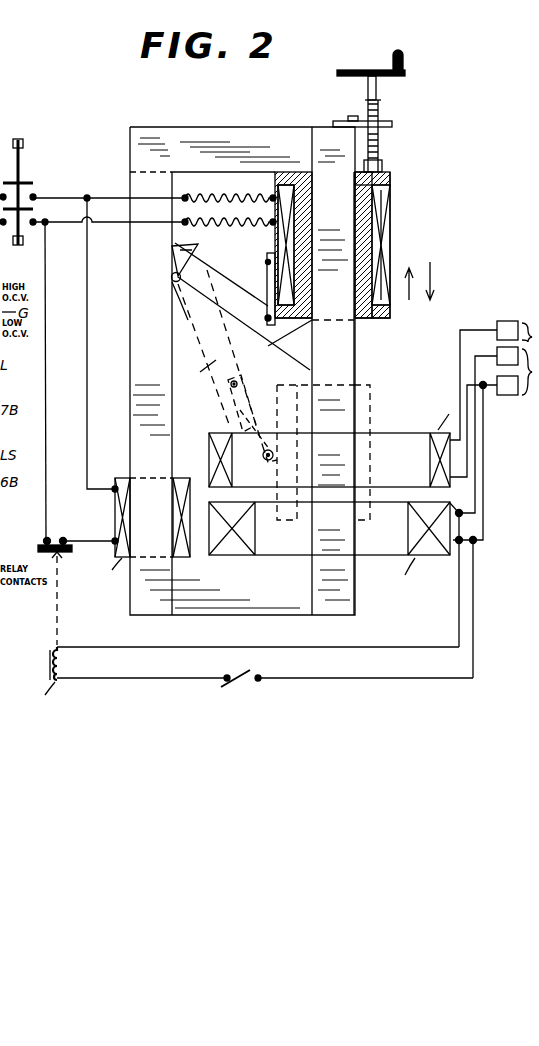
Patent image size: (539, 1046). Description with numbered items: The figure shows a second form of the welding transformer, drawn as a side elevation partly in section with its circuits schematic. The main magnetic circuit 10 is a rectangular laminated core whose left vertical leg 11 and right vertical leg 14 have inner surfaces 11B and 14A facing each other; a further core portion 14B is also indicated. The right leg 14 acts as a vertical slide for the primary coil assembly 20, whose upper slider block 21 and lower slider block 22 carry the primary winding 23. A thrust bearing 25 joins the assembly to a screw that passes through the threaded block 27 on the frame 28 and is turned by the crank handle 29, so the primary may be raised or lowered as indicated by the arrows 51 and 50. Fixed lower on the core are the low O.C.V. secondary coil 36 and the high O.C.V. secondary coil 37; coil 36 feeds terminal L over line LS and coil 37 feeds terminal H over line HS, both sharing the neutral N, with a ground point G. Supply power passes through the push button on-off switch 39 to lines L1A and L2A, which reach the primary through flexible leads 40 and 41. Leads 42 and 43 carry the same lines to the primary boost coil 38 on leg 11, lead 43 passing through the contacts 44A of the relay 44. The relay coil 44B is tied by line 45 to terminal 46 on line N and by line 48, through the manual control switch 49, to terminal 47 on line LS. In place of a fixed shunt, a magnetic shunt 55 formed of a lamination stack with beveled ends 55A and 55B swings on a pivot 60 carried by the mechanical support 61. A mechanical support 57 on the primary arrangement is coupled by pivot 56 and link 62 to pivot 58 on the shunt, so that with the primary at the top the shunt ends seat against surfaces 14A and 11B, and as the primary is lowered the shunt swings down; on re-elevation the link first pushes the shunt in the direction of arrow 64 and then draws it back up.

The main magnetic circuit 10 is at (213, 134).
The left vertical leg 11 is at (148, 320).
The inner surface of leg 11 11B is at (171, 276).
The right vertical leg 14 is at (348, 337).
The inner surface of leg 14 14A is at (320, 334).
The core leg 14B is at (375, 435).
The primary coil assembly 20 is at (401, 205).
The upper slider block 21 is at (391, 187).
The lower slider block 22 is at (382, 316).
The primary winding 23 is at (386, 252).
The thrust bearing 25 is at (381, 171).
The threaded block 27 is at (380, 118).
The frame 28 is at (393, 125).
The crank handle 29 is at (385, 70).
The low O.C.V. secondary coil 36 is at (460, 556).
The high O.C.V. secondary coil 37 is at (464, 486).
The primary boost coil 38 is at (112, 522).
The push button on-off switch 39 is at (35, 183).
The flexible lead 40 is at (227, 196).
The flexible lead 41 is at (258, 212).
The lead 42 is at (88, 435).
The lead 43 is at (47, 415).
The relay 44 is at (47, 628).
The relay contacts 44A is at (50, 540).
The relay coil 44B is at (50, 667).
The line 45 is at (345, 646).
The terminal 46 is at (462, 515).
The terminal 47 is at (478, 542).
The line 48 is at (392, 678).
The manual control switch 49 is at (244, 678).
The downward movement 50 is at (432, 272).
The arrows 51 is at (410, 262).
The magnetic shunt 55 is at (221, 274).
The beveled end surface 55A is at (282, 340).
The beveled end surface 55B is at (171, 246).
The pivot 56 is at (266, 262).
The mechanical support 57 is at (268, 250).
The pivot 58 is at (266, 318).
The pivot 60 is at (174, 280).
The mechanical support 61 is at (176, 283).
The link 62 is at (243, 293).
The arrow 64 is at (191, 380).
The terminal H is at (500, 325).
The ground jack G is at (497, 356).
The terminal L is at (497, 386).
The line HS is at (460, 371).
The neutral terminal/line N is at (468, 462).
The line LS is at (484, 490).
The supply line L1A is at (109, 188).
The supply line L2A is at (70, 226).